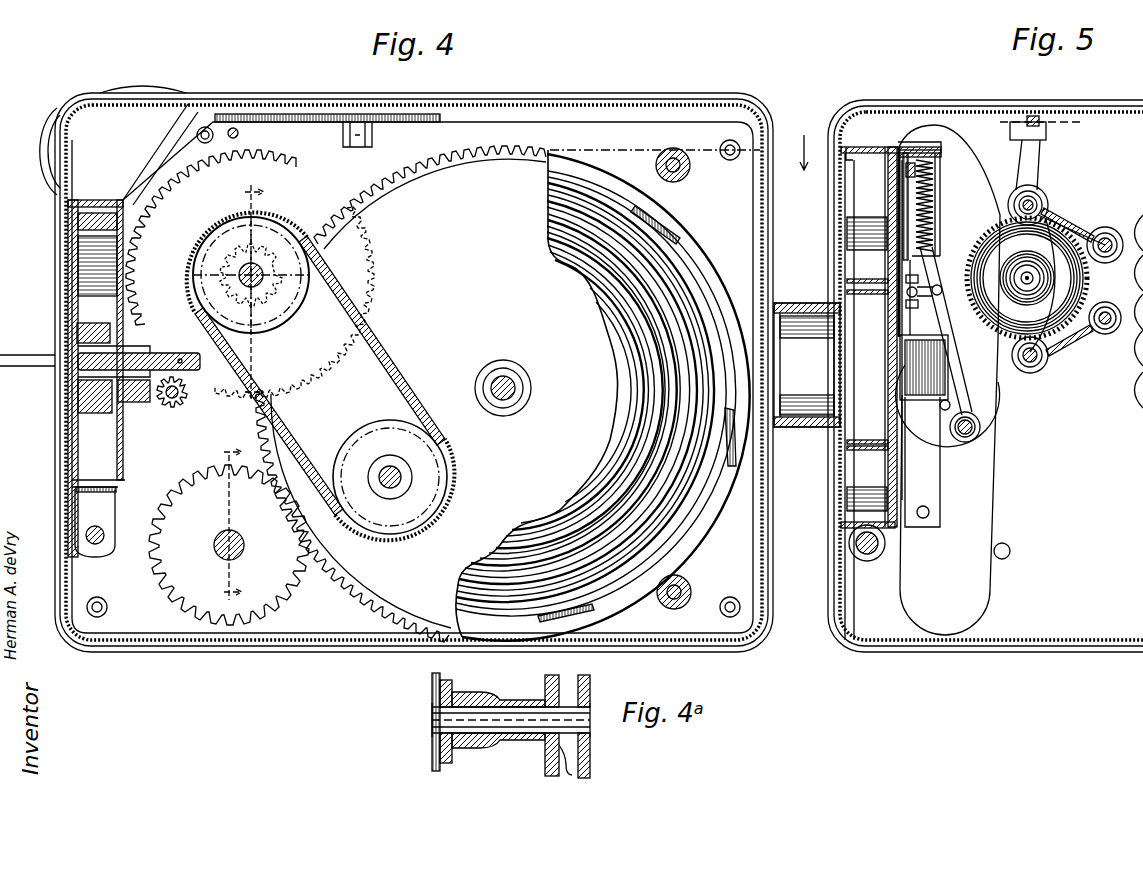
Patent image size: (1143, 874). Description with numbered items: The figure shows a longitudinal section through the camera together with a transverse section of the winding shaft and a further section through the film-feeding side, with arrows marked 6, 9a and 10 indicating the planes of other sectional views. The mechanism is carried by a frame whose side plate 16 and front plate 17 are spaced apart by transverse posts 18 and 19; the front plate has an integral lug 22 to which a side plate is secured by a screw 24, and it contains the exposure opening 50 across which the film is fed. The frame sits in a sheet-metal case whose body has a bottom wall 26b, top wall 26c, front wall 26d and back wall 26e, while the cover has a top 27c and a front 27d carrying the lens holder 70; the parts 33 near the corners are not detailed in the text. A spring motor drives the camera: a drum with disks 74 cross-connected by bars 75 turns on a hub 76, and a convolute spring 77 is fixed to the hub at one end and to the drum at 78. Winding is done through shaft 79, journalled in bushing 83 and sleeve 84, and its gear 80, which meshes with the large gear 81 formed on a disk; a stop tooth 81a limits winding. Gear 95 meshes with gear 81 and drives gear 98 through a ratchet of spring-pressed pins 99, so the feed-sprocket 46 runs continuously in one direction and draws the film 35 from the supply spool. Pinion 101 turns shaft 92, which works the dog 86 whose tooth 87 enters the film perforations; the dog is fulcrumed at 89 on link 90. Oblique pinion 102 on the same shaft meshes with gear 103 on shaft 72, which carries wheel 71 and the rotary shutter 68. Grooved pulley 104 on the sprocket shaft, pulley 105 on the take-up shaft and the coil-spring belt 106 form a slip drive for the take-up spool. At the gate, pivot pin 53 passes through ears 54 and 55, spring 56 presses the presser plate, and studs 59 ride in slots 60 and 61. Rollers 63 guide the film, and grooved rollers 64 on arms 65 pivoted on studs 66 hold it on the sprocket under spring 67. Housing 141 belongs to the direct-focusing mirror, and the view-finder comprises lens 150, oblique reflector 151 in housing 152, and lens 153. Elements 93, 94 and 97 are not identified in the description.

In FIG. 5, the section line indicator 6 is at (811, 152).
In FIG. 4, the section line 9a is at (234, 518).
In FIG. 4, the section line 10 is at (248, 282).
In FIG. 4, the side plate 16 is at (762, 586).
In FIG. 4A, the side plate 16 is at (452, 764).
In FIG. 4, the front plate 17 is at (126, 477).
In FIG. 5, the front plate 17 is at (897, 497).
In FIG. 4, the transverse spacing post 18 is at (681, 158).
In FIG. 4, the transverse spacing post 19 is at (678, 610).
In FIG. 5, the lug 22 is at (942, 477).
In FIG. 5, the screw 24 is at (930, 513).
In FIG. 4, the bottom wall 26b is at (302, 645).
In FIG. 4, the top wall 26c is at (640, 84).
In FIG. 4, the front wall 26d is at (64, 230).
In FIG. 4, the back wall 26e is at (775, 238).
In FIG. 5, the top 27c is at (896, 106).
In FIG. 5, the front 27d is at (836, 618).
In FIG. 4, the screw 33 is at (730, 160).
In FIG. 5, the film 35 is at (986, 185).
In FIG. 5, the feed-sprocket 46 is at (1090, 284).
In FIG. 5, the exposure opening 50 is at (885, 380).
In FIG. 5, the pivot-pin 53 is at (942, 182).
In FIG. 5, the ear 54 is at (935, 158).
In FIG. 5, the ear 55 is at (944, 170).
In FIG. 5, the spring 56 is at (945, 204).
In FIG. 5, the stud 59 is at (879, 147).
In FIG. 5, the slot 60 is at (908, 150).
In FIG. 5, the slot 61 is at (920, 303).
In FIG. 5, the roller 63 is at (1110, 232).
In FIG. 5, the grooved roller 64 is at (1048, 203).
In FIG. 5, the arm 65 is at (1080, 222).
In FIG. 5, the stud 66 is at (1118, 248).
In FIG. 5, the spring 67 is at (1090, 234).
In FIG. 4, the rotary shutter 68 is at (78, 301).
In FIG. 5, the photographic holder 70 is at (813, 429).
In FIG. 4, the wheel 71 is at (92, 213).
In FIG. 4, the shaft 72 is at (140, 352).
In FIG. 4, the disk 74 is at (716, 541).
In FIG. 4, the bar 75 is at (682, 242).
In FIG. 4, the hub 76 is at (532, 386).
In FIG. 4, the convolute spring 77 is at (610, 275).
In FIG. 4, the spring attachment 78 is at (586, 614).
In FIG. 4, the shaft 79 is at (227, 560).
In FIG. 4A, the shaft 79 is at (590, 726).
In FIG. 4, the gear 80 is at (288, 578).
In FIG. 4A, the gear 80 is at (548, 762).
In FIG. 4, the large gear 81 is at (353, 517).
In FIG. 4, the stop tooth 81a is at (342, 580).
In FIG. 4A, the bushing 83 is at (592, 770).
In FIG. 4A, the sleeve 84 is at (478, 692).
In FIG. 5, the dog 86 is at (1012, 352).
In FIG. 5, the tooth 87 is at (920, 280).
In FIG. 5, the fulcrum 89 is at (944, 294).
In FIG. 5, the link 90 is at (888, 341).
In FIG. 5, the transverse shaft 92 is at (943, 410).
In FIG. 5, the pivot 93 is at (981, 431).
In FIG. 5, the lever plate 94 is at (998, 398).
In FIG. 4, the gear 95 is at (229, 226).
In FIG. 4, the shaft 97 is at (258, 268).
In FIG. 4, the gear 98 is at (407, 197).
In FIG. 4, the spring-pressed pin 99 is at (251, 275).
In FIG. 4, the pinion 101 is at (179, 407).
In FIG. 4, the oblique toothed pinion 102 is at (172, 418).
In FIG. 4, the gear 103 is at (178, 346).
In FIG. 4, the grooved pulley 104 is at (382, 296).
In FIG. 4, the grooved pulley 105 is at (406, 428).
In FIG. 4, the endless coil spring belt 106 is at (384, 332).
In FIG. 5, the housing 141 is at (924, 367).
In FIG. 4, the lens 150 is at (47, 150).
In FIG. 4, the oblique reflector 151 is at (187, 108).
In FIG. 4, the housing 152 is at (234, 128).
In FIG. 4, the lens 153 is at (142, 89).